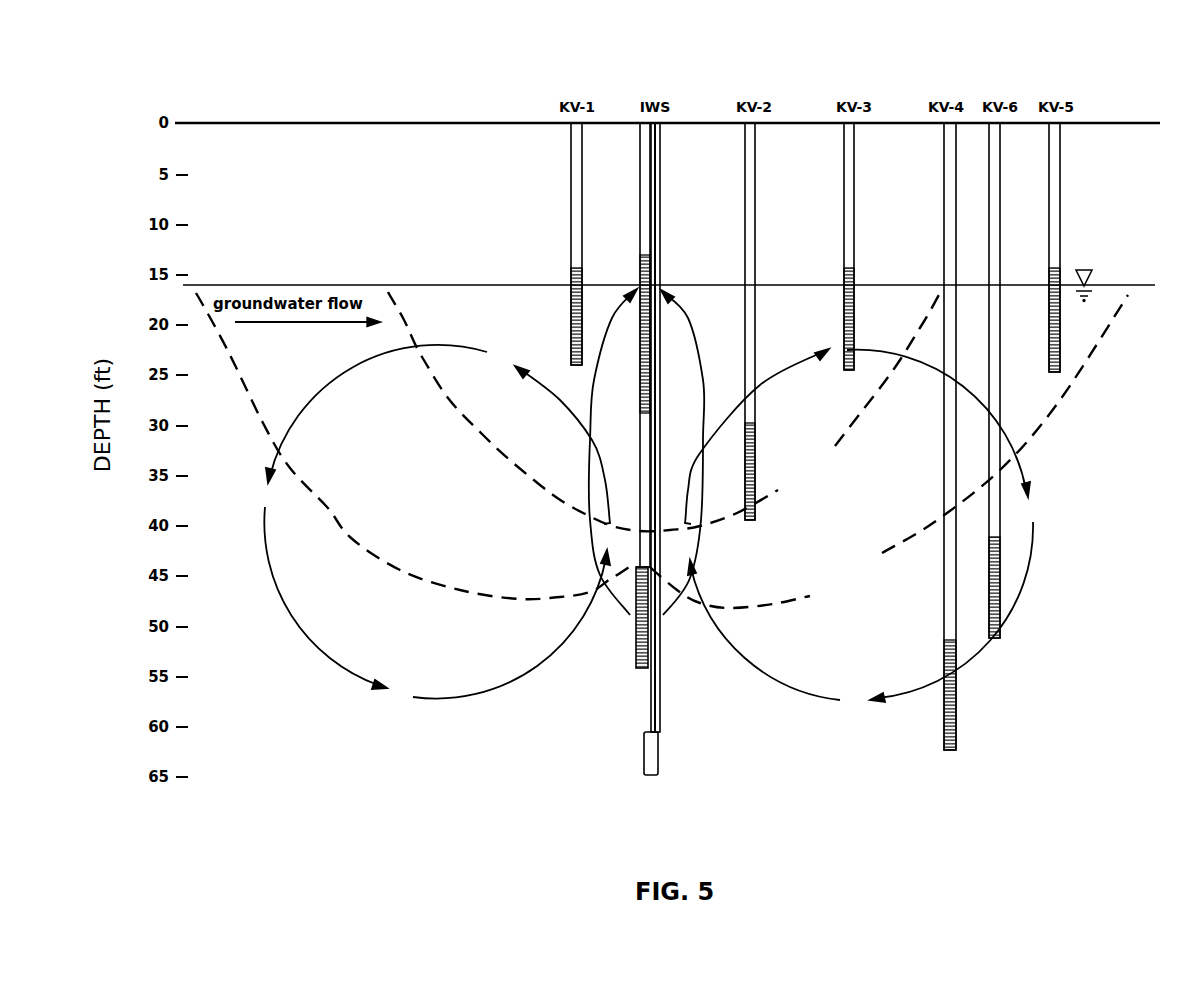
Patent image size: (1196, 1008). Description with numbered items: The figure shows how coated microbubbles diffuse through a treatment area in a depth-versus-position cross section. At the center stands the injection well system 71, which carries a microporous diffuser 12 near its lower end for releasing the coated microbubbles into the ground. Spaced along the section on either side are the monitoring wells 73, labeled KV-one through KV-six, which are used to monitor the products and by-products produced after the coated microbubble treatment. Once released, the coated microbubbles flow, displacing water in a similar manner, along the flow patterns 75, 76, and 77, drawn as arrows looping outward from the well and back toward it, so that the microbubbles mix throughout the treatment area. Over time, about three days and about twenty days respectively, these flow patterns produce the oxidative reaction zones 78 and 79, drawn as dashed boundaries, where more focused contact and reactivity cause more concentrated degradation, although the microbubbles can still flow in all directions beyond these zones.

The microporous diffuser 12 is at (658, 757).
The injection well system 71 is at (687, 405).
The monitoring wells 73 is at (571, 208).
The flow pattern 75 is at (1020, 590).
The flow pattern 76 is at (690, 323).
The flow pattern 77 is at (322, 663).
The oxidative reaction zone 78 is at (464, 414).
The oxidative reaction zone 79 is at (395, 563).